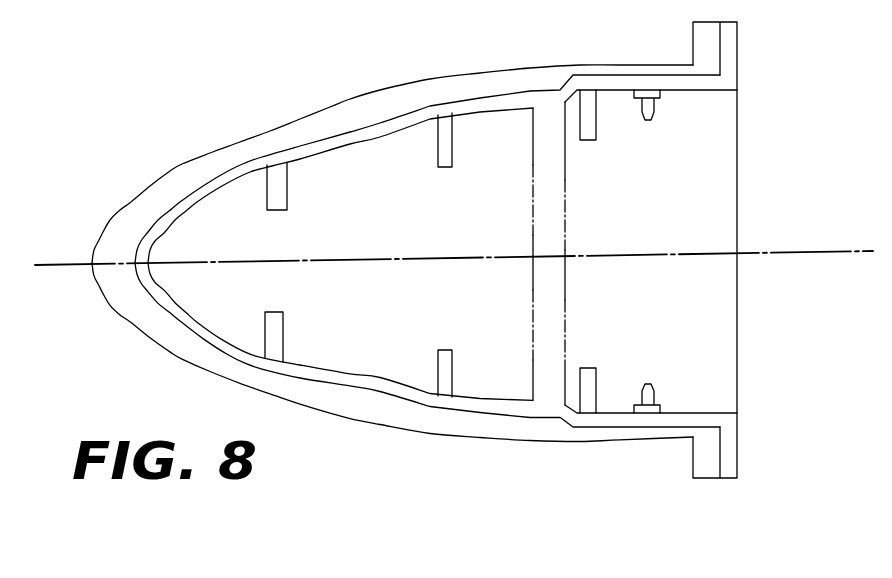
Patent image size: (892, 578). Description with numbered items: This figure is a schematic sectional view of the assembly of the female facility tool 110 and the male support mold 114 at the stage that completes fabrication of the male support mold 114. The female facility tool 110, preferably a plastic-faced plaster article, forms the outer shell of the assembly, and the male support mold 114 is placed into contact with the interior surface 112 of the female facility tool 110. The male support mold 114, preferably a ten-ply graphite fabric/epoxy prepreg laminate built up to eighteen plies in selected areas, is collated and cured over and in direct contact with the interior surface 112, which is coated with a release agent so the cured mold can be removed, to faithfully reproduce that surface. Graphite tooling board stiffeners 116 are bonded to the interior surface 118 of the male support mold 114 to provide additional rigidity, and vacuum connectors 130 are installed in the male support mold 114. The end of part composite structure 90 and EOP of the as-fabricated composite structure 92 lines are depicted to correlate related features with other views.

The end of part composite structure line 90 is at (538, 290).
The EOP of the as-fabricated composite structure line 92 is at (565, 215).
The female facility tool 110 is at (318, 110).
The interior surface 112 is at (262, 155).
The male support mold 114 is at (200, 187).
The graphite tooling board stiffeners 116 is at (285, 198).
The interior surface 118 is at (177, 308).
The vacuum connectors 130 is at (660, 104).